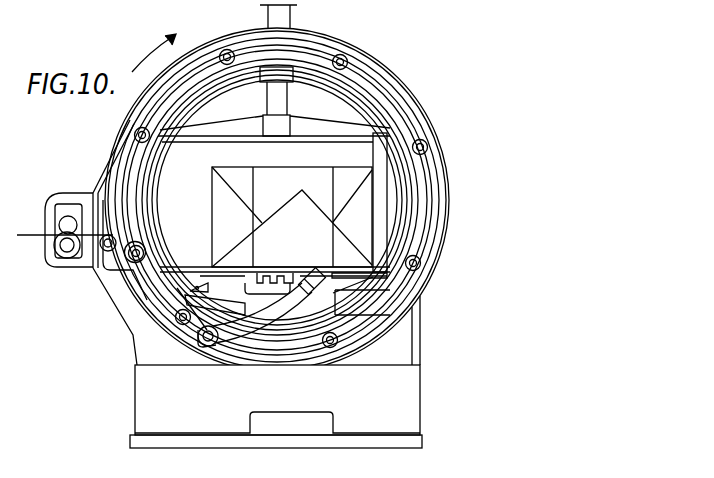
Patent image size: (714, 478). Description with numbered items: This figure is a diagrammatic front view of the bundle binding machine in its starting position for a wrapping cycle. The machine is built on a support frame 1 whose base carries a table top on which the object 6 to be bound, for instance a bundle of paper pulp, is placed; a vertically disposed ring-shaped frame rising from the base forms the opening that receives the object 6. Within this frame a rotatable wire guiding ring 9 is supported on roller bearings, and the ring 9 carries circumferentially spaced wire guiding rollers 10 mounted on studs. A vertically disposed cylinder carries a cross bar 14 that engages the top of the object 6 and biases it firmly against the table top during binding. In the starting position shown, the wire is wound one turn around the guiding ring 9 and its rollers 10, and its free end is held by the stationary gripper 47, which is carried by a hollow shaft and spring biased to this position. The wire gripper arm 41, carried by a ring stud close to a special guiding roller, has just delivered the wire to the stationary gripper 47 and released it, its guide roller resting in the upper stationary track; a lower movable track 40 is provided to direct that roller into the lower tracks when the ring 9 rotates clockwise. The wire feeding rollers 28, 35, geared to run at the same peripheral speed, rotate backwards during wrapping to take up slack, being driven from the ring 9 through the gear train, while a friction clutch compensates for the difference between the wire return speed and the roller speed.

The support frame 1 is at (424, 304).
The object 6 is at (292, 217).
The wire guiding ring 9 is at (432, 226).
The wire guiding rollers 10 is at (427, 141).
The cross bar 14 is at (350, 127).
The lower wire feeding roller 28 is at (60, 254).
The wire feeding roller 35 is at (64, 220).
The lower movable track 40 is at (199, 327).
The wire gripper arm 41 is at (273, 330).
The stationary gripper 47 is at (338, 296).